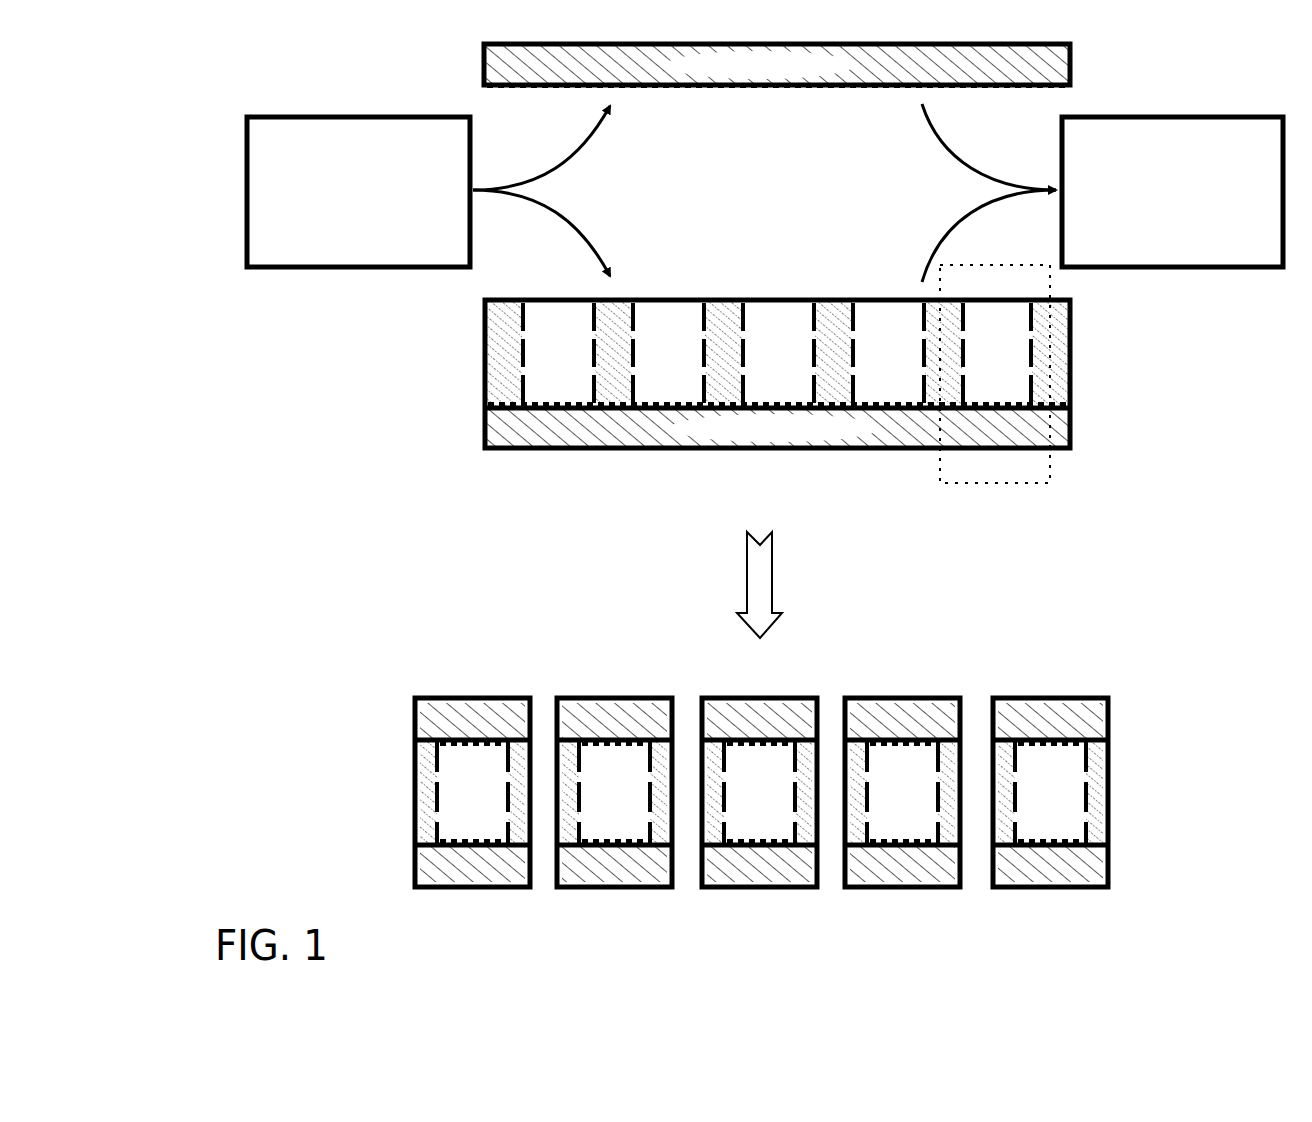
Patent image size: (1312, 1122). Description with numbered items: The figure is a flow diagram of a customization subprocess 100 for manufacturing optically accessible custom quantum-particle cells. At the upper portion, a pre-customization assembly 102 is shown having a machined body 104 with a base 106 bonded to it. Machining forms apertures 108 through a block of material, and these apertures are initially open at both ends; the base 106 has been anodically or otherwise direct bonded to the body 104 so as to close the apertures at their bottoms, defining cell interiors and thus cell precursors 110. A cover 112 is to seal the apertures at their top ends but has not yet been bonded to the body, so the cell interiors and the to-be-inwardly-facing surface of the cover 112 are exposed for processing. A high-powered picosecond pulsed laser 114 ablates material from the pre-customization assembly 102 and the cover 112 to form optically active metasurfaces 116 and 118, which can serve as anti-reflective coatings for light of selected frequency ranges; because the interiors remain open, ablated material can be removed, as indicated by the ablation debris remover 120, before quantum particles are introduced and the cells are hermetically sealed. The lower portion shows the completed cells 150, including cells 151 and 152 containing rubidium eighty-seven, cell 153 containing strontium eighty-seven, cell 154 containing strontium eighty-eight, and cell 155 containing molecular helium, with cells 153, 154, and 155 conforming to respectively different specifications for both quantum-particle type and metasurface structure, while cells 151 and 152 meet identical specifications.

The customization subprocess 100 is at (764, 193).
The pre-customization assembly 102 is at (701, 401).
The machined body 104 is at (485, 345).
The base 106 is at (777, 427).
The apertures 108 is at (663, 386).
The cell precursors 110 is at (975, 484).
The cover 112 is at (876, 72).
The high-powered picosecond pulsed laser 114 is at (358, 192).
The metasurfaces 116 is at (1030, 398).
The metasurfaces 118 is at (995, 87).
The ablation debris remover 120 is at (1172, 192).
The completed cells 150 is at (758, 791).
The cell 151 is at (472, 778).
The cell 152 is at (614, 778).
The cell 153 is at (759, 778).
The cell 154 is at (902, 778).
The cell 155 is at (1050, 778).